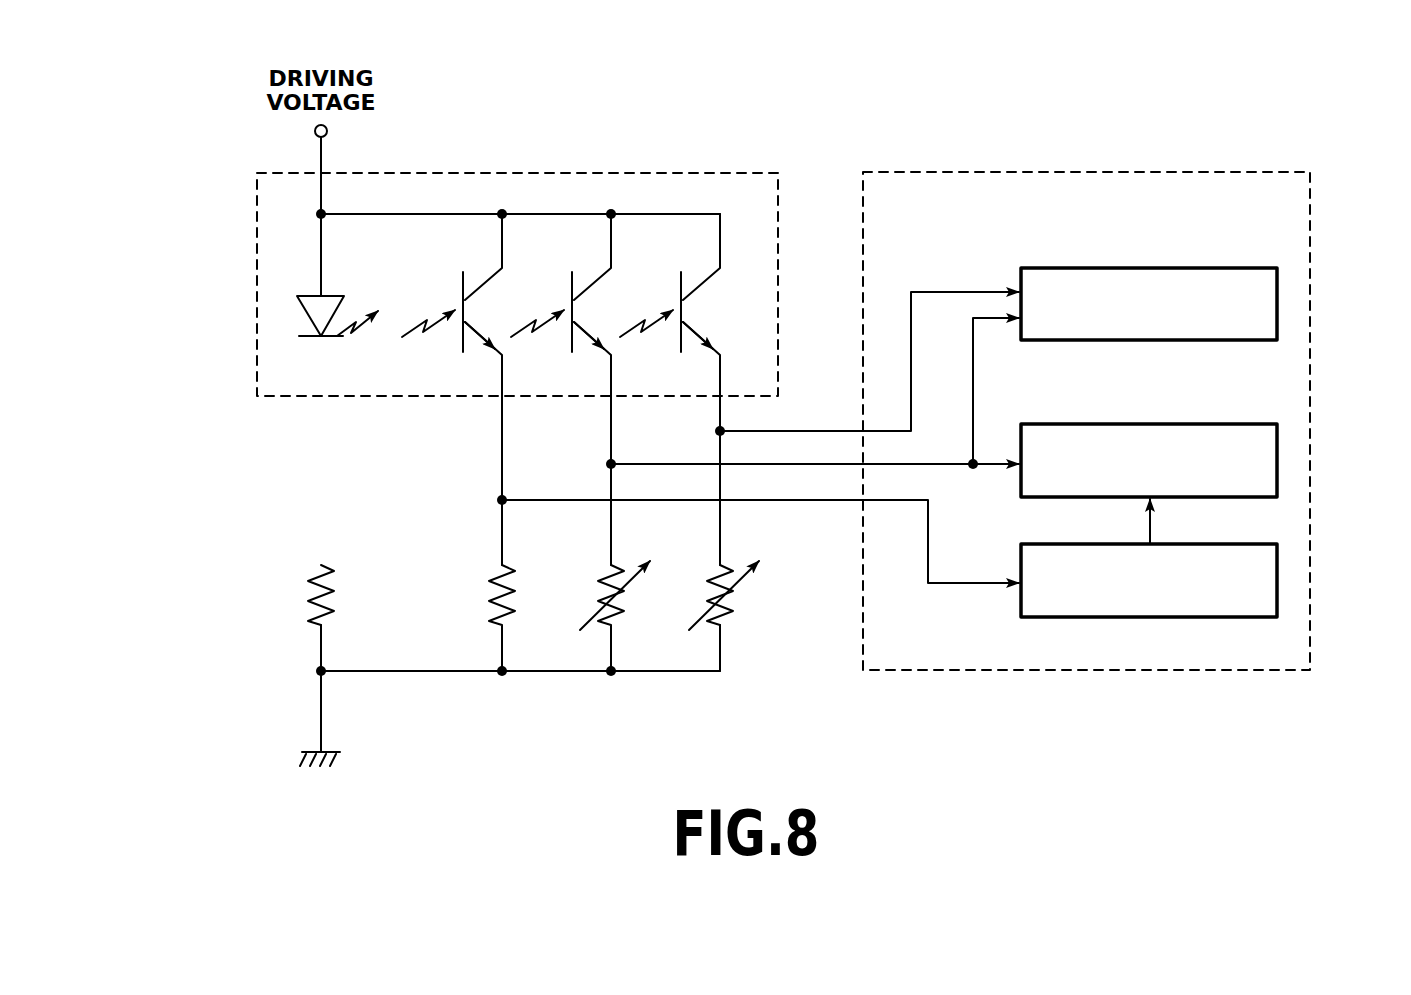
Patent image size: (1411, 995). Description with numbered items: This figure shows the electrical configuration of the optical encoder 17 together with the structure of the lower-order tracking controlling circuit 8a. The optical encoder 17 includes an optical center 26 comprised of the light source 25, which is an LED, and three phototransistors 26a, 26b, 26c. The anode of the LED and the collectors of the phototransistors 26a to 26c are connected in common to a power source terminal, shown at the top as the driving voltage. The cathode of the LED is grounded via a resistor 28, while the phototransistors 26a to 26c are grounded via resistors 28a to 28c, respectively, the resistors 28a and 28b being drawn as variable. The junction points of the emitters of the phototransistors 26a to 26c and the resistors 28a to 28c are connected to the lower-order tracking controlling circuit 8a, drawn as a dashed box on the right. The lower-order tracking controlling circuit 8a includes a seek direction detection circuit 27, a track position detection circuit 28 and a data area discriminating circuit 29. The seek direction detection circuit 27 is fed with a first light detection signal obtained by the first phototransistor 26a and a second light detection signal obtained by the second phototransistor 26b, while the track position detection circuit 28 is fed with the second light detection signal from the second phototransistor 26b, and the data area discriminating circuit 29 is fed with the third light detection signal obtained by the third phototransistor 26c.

The lower-order tracking controlling circuit 8a is at (1315, 214).
The optical encoder 17 is at (255, 225).
The light source 25 is at (305, 316).
The optical center 26 is at (757, 95).
The first phototransistor 26a is at (704, 283).
The second phototransistor 26b is at (594, 283).
The third phototransistor 26c is at (485, 283).
The seek direction detection circuit 27 is at (1177, 267).
The track position detection circuit 28 is at (300, 598).
The resistor 28a is at (737, 608).
The resistor 28b is at (628, 608).
The resistor 28c is at (520, 608).
The data area discriminating circuit 29 is at (1185, 617).